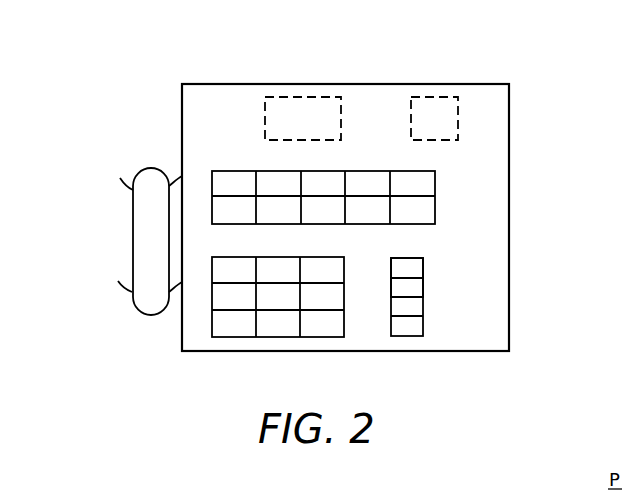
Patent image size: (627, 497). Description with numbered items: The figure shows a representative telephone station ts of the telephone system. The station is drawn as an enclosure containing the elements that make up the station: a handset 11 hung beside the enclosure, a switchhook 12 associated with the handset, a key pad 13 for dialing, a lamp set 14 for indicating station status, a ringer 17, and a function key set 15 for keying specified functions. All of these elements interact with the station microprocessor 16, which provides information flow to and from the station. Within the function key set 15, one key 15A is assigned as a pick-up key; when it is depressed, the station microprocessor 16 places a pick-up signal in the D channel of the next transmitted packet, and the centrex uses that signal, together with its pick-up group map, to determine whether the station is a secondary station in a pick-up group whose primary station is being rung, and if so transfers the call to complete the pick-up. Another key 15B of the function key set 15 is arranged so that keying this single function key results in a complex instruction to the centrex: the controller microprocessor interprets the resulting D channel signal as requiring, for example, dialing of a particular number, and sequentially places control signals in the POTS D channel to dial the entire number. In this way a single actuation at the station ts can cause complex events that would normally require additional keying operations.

The telephone station ts is at (181, 103).
The handset 11 is at (151, 168).
The switchhook 12 is at (131, 292).
The key pad 13 is at (236, 337).
The lamp set 14 is at (435, 184).
The function key set 15 is at (424, 320).
The pick-up key 15A is at (424, 265).
The function key 15B is at (424, 285).
The station microprocessor 16 is at (312, 105).
The ringer 17 is at (432, 105).